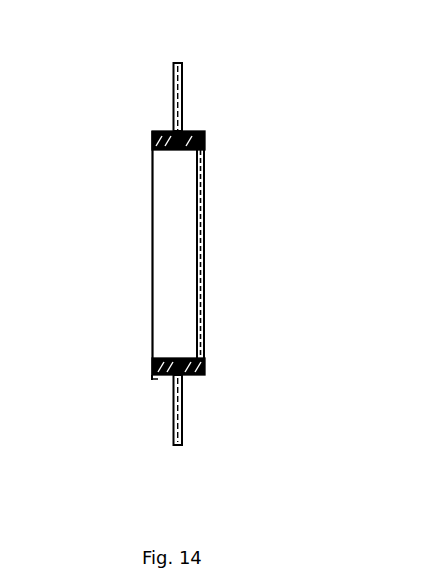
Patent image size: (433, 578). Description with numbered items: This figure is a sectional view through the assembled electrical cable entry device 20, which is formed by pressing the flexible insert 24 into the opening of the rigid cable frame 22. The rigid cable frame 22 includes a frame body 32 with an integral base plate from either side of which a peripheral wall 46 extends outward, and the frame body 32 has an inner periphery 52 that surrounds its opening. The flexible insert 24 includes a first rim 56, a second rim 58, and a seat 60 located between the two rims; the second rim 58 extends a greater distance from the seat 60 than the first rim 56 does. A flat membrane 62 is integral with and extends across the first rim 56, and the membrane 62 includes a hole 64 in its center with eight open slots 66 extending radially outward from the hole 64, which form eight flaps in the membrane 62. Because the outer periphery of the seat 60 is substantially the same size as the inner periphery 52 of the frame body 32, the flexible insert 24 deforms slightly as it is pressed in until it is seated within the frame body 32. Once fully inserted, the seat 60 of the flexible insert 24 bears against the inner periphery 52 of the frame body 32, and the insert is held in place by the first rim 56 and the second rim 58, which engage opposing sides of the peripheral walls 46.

The electrical cable entry device 20 is at (117, 163).
The rigid cable frame 22 is at (190, 138).
The flexible insert 24 is at (151, 264).
The frame body 32 is at (206, 149).
The peripheral wall 46 is at (169, 378).
The inner periphery 52 is at (180, 137).
The first rim 56 is at (200, 377).
The second rim 58 is at (154, 378).
The seat 60 is at (184, 132).
The membrane 62 is at (203, 170).
The hole 64 is at (203, 257).
The open slots 66 is at (203, 218).